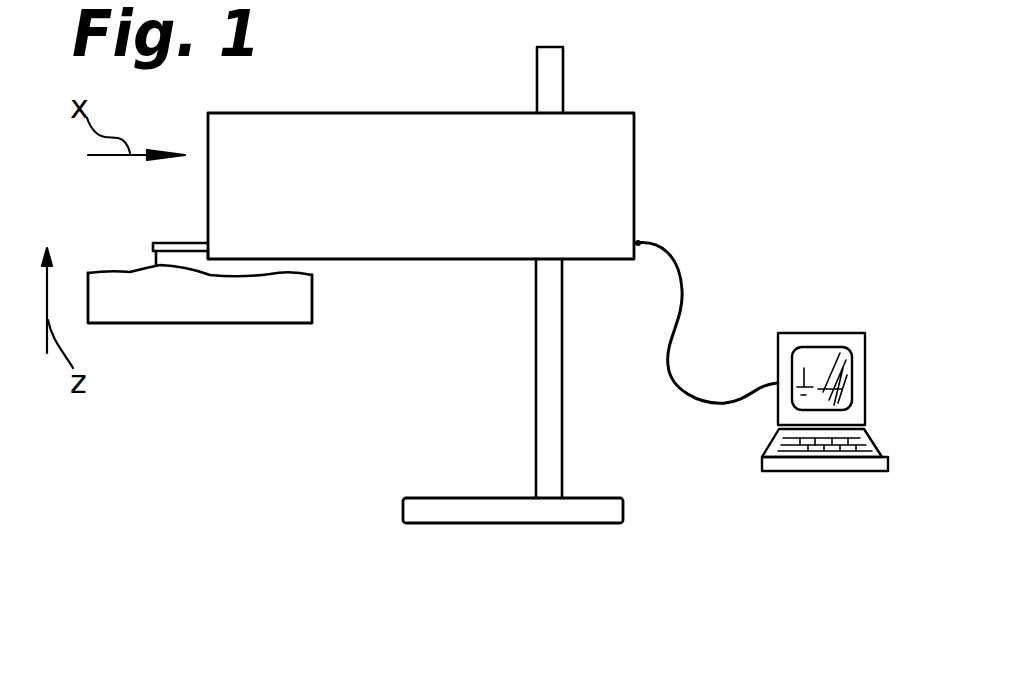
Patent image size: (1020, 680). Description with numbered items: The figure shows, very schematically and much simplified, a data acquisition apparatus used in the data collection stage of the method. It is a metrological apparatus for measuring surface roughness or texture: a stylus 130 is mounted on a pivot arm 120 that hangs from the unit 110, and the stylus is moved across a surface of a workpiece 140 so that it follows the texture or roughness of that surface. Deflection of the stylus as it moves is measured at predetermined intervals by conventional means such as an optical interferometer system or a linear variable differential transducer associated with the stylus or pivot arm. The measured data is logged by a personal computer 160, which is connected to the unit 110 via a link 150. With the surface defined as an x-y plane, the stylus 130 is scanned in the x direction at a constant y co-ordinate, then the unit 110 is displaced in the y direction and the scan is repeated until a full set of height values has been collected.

The unit 110 is at (637, 159).
The pivot arm 120 is at (173, 241).
The stylus 130 is at (150, 258).
The workpiece 140 is at (187, 306).
The link 150 is at (648, 246).
The personal computer 160 is at (827, 333).